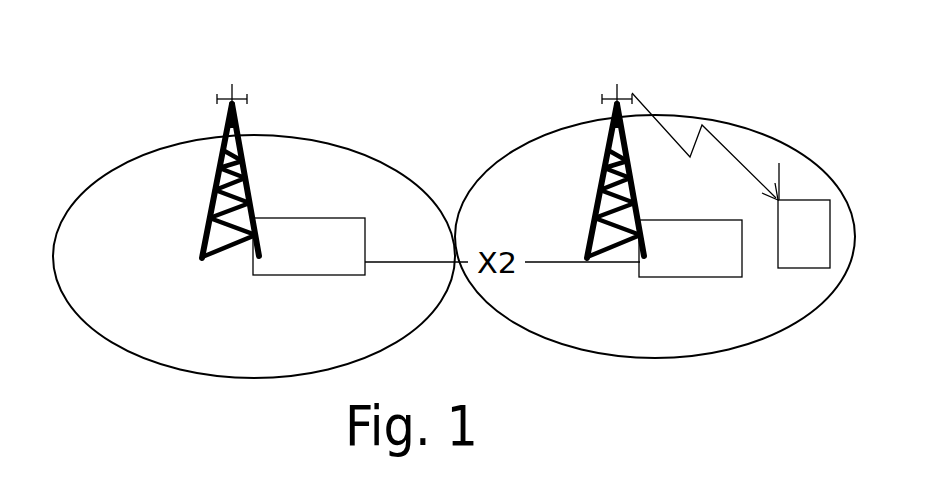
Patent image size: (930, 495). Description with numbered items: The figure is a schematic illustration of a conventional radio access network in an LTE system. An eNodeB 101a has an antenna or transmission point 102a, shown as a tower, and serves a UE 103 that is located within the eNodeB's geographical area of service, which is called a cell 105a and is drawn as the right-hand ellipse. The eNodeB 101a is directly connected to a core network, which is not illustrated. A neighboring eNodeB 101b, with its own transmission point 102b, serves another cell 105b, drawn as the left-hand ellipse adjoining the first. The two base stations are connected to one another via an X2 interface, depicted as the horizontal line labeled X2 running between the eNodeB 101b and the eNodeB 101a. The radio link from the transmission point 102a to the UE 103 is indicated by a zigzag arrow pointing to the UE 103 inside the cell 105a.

The eNodeB 101a is at (652, 267).
The neighboring eNodeB 101b is at (307, 277).
The antenna or transmission point 102a is at (621, 92).
The transmission point 102b is at (233, 92).
The UE 103 is at (777, 270).
The cell 105a is at (747, 134).
The cell 105b is at (352, 162).